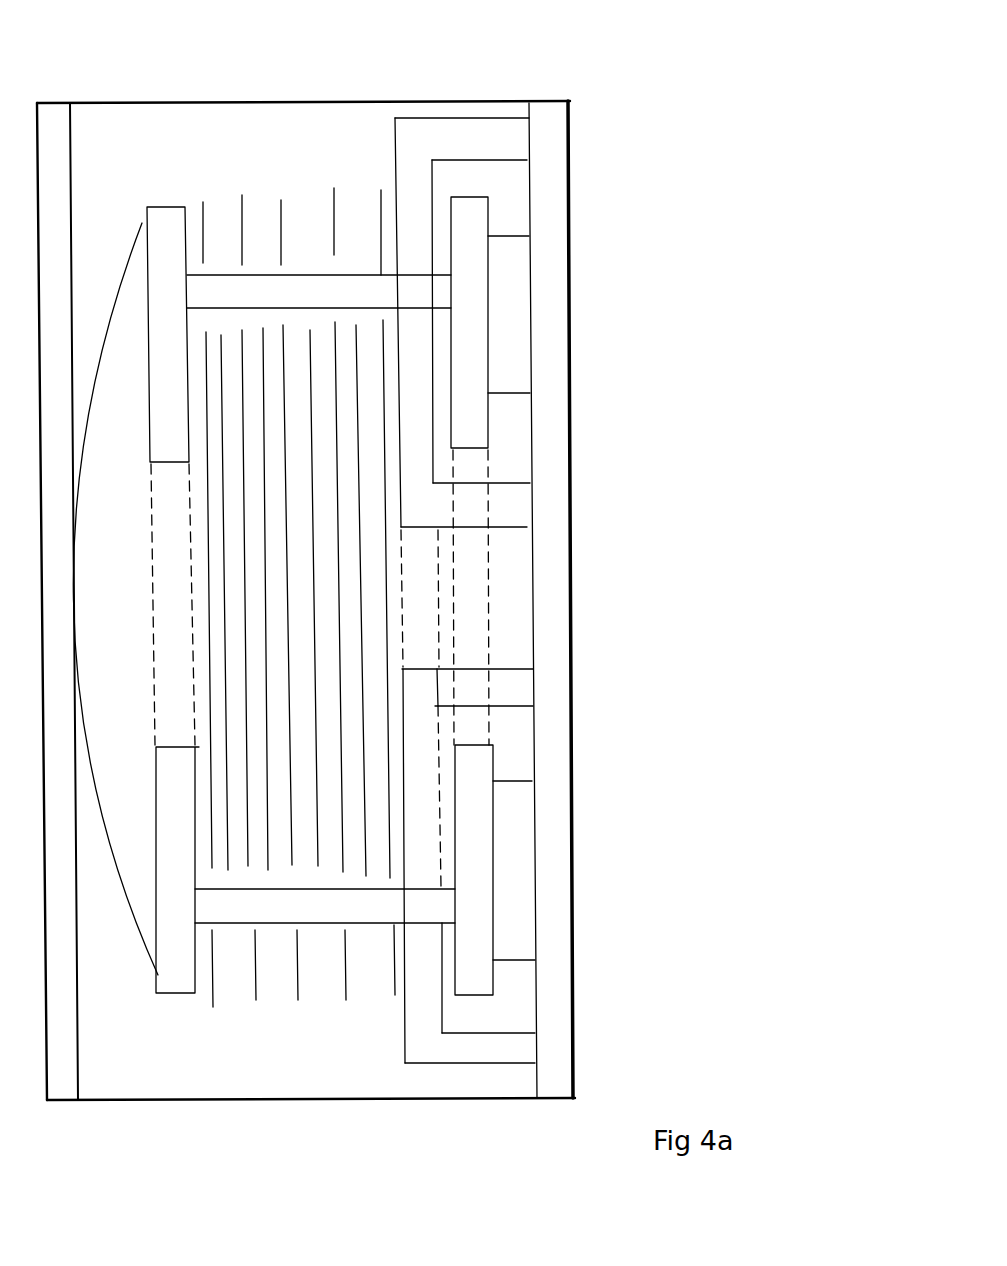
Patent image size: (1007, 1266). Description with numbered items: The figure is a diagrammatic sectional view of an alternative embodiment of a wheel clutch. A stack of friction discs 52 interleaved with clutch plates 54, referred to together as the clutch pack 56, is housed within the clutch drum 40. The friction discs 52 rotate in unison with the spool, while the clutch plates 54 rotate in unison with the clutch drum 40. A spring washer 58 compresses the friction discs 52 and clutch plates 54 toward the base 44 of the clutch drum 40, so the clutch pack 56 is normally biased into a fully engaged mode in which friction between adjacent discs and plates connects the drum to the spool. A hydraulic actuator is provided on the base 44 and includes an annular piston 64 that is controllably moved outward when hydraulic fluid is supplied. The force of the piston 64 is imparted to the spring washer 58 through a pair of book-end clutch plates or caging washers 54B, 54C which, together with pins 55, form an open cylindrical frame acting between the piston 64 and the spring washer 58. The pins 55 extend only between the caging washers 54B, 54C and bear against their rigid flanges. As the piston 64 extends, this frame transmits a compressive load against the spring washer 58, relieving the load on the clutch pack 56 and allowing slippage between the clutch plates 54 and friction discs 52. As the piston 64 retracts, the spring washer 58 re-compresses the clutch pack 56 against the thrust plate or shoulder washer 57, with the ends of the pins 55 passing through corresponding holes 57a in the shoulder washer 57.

The clutch drum 40 is at (391, 71).
The base 44 is at (572, 557).
The friction discs 52 is at (296, 275).
The clutch plates 54 is at (241, 200).
The book-end clutch plate or caging washer 54B is at (488, 215).
The book-end clutch plate or caging washer 54C is at (154, 207).
The pins 55 is at (222, 275).
The clutch pack 56 is at (305, 170).
The thrust plate or shoulder washer 57 is at (444, 118).
The holes 57a is at (437, 262).
The spring washer 58 is at (128, 262).
The annular piston 64 is at (514, 394).